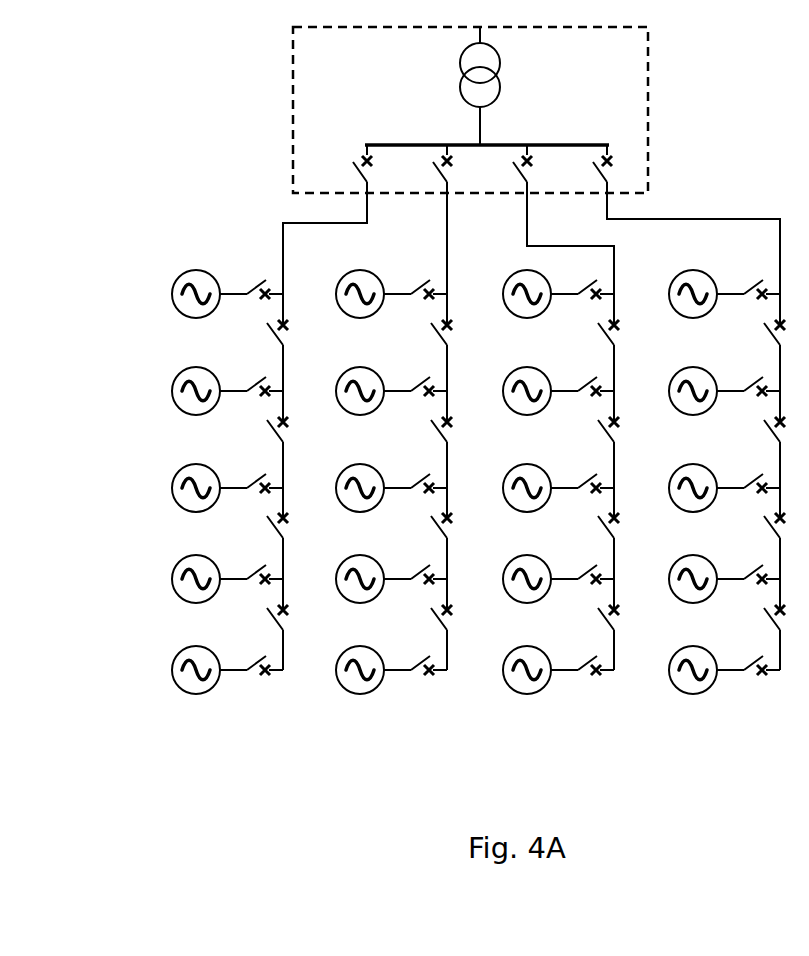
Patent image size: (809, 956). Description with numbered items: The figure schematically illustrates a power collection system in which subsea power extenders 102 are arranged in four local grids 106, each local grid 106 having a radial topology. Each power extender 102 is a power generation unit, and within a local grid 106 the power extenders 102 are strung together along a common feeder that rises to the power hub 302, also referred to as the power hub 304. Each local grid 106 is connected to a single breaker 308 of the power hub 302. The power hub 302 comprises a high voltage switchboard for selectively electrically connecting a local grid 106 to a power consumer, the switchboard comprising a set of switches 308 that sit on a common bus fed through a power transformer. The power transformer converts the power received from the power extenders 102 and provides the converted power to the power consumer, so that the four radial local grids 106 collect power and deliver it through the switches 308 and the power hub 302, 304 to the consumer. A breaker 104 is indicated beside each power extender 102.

The power extender 102 is at (156, 278).
The generator circuit breaker 104 is at (250, 249).
The local grid 106 is at (273, 708).
The power hub 302 is at (364, 78).
The power hub 304 is at (526, 78).
The breaker 308 is at (325, 159).